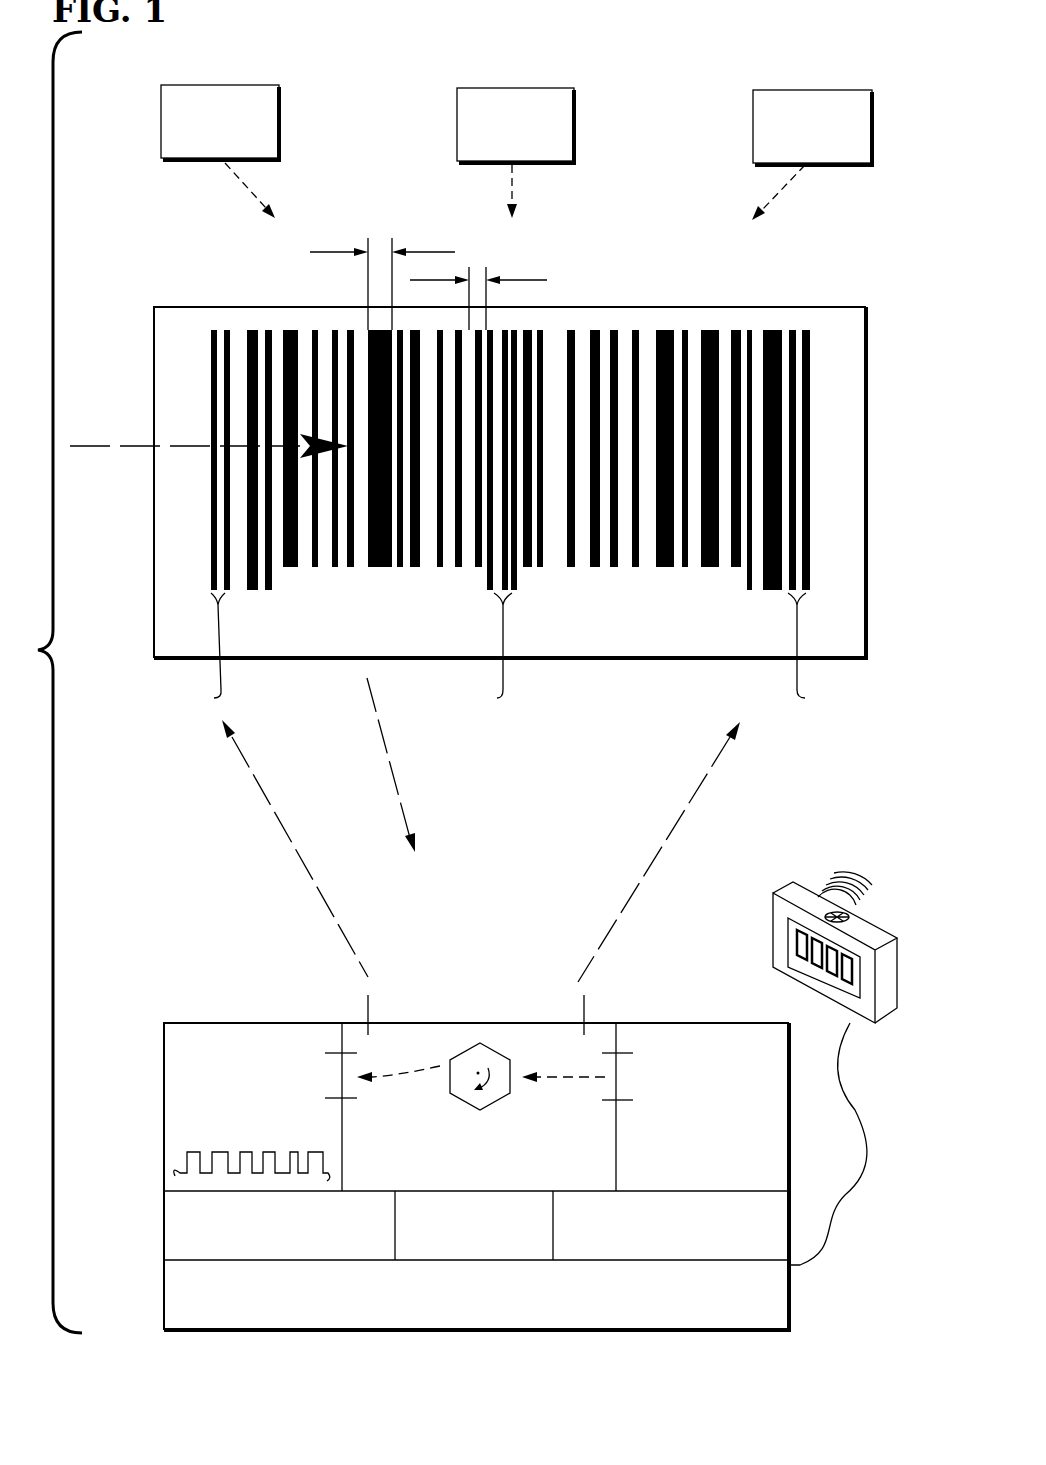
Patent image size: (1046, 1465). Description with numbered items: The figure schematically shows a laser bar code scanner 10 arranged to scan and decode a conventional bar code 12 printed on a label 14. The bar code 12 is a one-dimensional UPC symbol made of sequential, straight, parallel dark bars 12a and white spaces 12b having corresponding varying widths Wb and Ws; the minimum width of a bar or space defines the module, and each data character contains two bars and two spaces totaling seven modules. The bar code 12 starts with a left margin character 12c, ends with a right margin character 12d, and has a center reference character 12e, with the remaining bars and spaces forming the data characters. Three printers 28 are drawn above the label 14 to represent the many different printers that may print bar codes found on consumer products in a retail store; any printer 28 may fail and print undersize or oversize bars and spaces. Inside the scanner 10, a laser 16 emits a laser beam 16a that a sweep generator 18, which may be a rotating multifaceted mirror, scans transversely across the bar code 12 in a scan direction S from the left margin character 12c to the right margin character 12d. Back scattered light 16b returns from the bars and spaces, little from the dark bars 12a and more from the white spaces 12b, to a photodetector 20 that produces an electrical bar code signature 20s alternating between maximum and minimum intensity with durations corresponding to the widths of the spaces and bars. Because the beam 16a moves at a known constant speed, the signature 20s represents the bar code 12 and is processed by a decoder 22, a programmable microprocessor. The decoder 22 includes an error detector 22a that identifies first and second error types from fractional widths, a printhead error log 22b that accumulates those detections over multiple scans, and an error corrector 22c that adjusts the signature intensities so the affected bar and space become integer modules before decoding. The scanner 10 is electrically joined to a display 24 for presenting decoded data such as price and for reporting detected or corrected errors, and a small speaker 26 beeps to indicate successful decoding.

The laser bar code scanner 10 is at (668, 954).
The bar code 12 is at (812, 386).
The dark bars 12a is at (253, 330).
The white spaces 12b is at (280, 330).
The left margin character 12c is at (201, 649).
The right margin character 12d is at (818, 650).
The center reference character 12e is at (486, 650).
The label 14 is at (850, 307).
The laser 16 is at (705, 1151).
The laser beam 16a is at (137, 446).
The back scattered light 16b is at (395, 778).
The sweep generator 18 is at (393, 1144).
The photodetector 20 is at (260, 1056).
The bar code signature 20s is at (178, 1168).
The decoder 22 is at (660, 1307).
The error detector 22a is at (370, 1237).
The printhead error log 22b is at (528, 1245).
The error corrector 22c is at (610, 1228).
The display 24 is at (795, 970).
The speaker 26 is at (850, 922).
The linear printer 28 is at (172, 85).
The scan direction S is at (118, 447).
The bar width Wb is at (325, 252).
The space width Ws is at (530, 280).